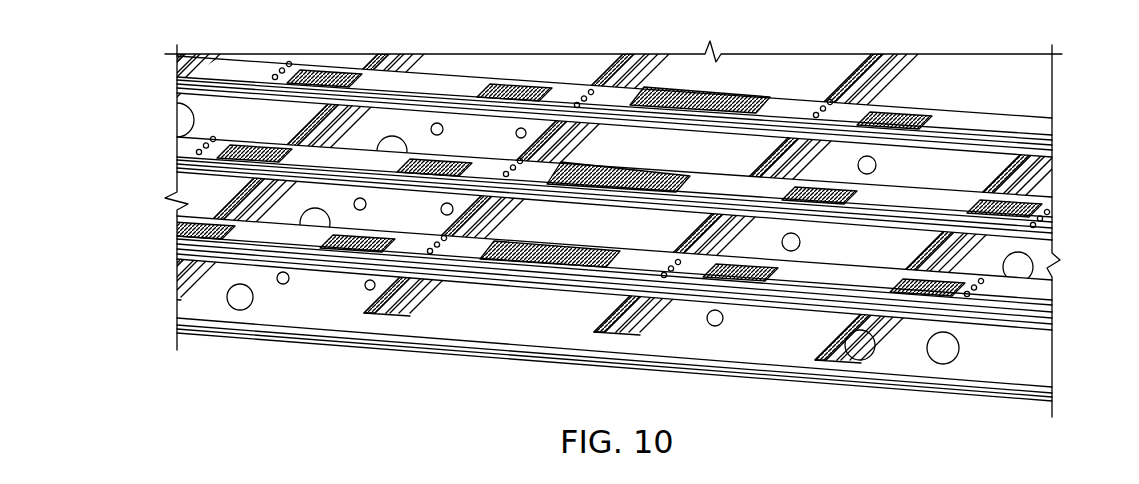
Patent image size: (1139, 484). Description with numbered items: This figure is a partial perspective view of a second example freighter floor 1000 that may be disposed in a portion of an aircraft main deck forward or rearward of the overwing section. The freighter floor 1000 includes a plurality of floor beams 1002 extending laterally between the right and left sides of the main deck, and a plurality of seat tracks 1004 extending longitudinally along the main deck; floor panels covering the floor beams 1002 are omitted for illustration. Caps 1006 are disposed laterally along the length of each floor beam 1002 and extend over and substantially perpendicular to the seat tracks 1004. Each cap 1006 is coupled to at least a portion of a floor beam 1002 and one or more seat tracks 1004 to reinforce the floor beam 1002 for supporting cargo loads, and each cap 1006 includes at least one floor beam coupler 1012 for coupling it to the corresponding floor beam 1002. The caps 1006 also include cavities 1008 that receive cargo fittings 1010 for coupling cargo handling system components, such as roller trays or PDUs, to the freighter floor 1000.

The freighter floor 1000 is at (990, 96).
The floor beam 1002 is at (177, 94).
The seat track 1004 is at (617, 54).
The cap 1006 is at (483, 66).
The cavity 1008 is at (547, 169).
The cargo fitting 1010 is at (714, 93).
The floor beam coupler 1012 is at (990, 138).